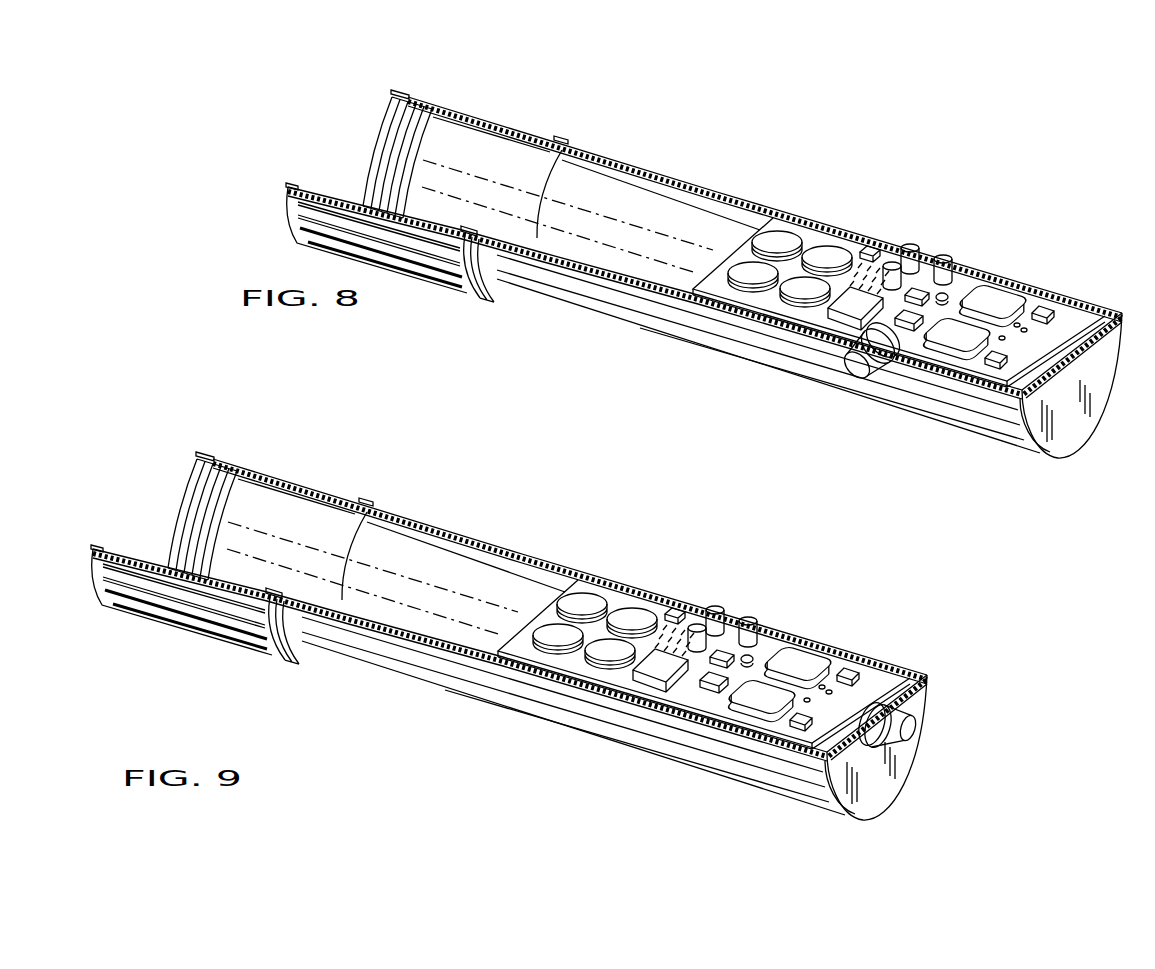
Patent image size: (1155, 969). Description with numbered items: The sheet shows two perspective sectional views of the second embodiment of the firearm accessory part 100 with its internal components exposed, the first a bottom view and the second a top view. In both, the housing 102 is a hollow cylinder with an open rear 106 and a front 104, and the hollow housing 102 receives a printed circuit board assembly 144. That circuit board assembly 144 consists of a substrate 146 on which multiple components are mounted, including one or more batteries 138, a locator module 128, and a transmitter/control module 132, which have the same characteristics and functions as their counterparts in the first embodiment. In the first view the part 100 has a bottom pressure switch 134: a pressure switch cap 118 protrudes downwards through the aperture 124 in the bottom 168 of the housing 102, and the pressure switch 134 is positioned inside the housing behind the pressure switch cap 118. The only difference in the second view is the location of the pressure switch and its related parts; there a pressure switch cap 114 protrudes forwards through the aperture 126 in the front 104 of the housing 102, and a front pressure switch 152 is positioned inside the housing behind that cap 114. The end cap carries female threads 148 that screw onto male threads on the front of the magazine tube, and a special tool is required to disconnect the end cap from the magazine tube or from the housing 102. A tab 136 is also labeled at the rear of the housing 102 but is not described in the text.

In FIG. 8, the firearm accessory part 100 is at (704, 273).
In FIG. 9, the firearm accessory part 100 is at (541, 640).
In FIG. 8, the housing 102 is at (647, 171).
In FIG. 9, the housing 102 is at (396, 525).
In FIG. 8, the front 104 is at (1050, 405).
In FIG. 9, the front 104 is at (876, 781).
In FIG. 8, the open rear 106 is at (385, 143).
In FIG. 9, the open rear 106 is at (182, 495).
In FIG. 9, the pressure switch cap 114 is at (932, 698).
In FIG. 8, the pressure switch cap 118 is at (858, 364).
In FIG. 8, the aperture 124 is at (882, 362).
In FIG. 9, the aperture 126 is at (892, 795).
In FIG. 8, the locator module 128 is at (960, 320).
In FIG. 9, the locator module 128 is at (761, 643).
In FIG. 8, the transmitter/control module 132 is at (995, 300).
In FIG. 9, the transmitter/control module 132 is at (800, 641).
In FIG. 8, the pressure switch 134 is at (797, 327).
In FIG. 8, the tab 136 is at (397, 88).
In FIG. 9, the tab 136 is at (240, 426).
In FIG. 8, the batteries 138 is at (829, 250).
In FIG. 8, the printed circuit board assembly 144 is at (787, 213).
In FIG. 9, the printed circuit board assembly 144 is at (704, 615).
In FIG. 8, the substrate 146 is at (852, 243).
In FIG. 9, the substrate 146 is at (746, 618).
In FIG. 8, the female threads 148 is at (420, 108).
In FIG. 9, the female threads 148 is at (570, 561).
In FIG. 9, the pressure switch 152 is at (895, 678).
In FIG. 8, the bottom 168 is at (663, 333).
In FIG. 9, the bottom 168 is at (468, 682).